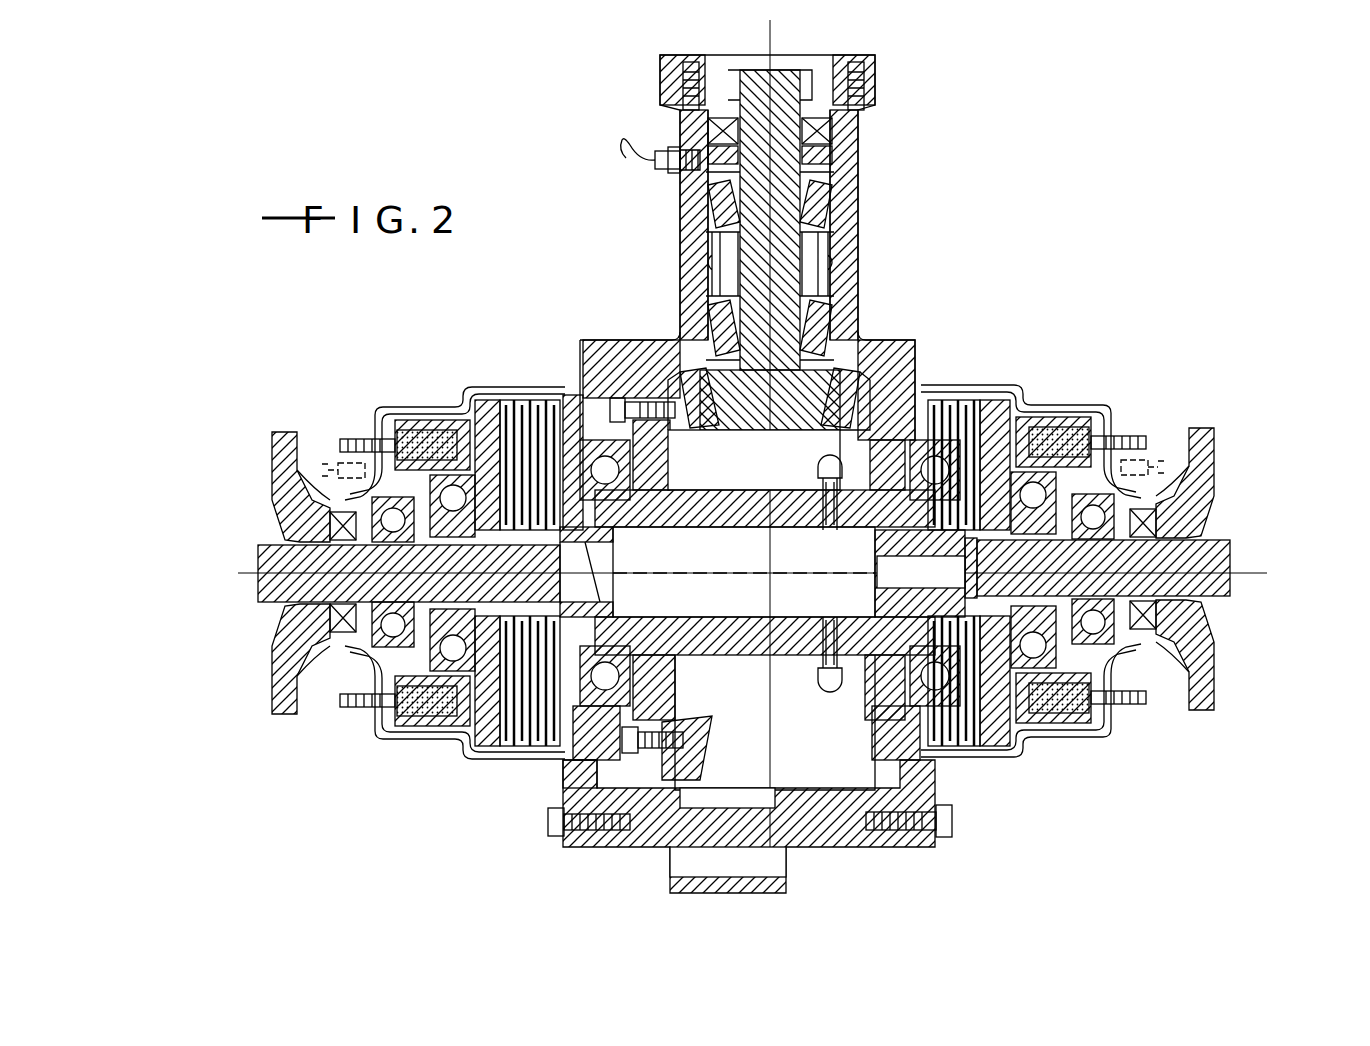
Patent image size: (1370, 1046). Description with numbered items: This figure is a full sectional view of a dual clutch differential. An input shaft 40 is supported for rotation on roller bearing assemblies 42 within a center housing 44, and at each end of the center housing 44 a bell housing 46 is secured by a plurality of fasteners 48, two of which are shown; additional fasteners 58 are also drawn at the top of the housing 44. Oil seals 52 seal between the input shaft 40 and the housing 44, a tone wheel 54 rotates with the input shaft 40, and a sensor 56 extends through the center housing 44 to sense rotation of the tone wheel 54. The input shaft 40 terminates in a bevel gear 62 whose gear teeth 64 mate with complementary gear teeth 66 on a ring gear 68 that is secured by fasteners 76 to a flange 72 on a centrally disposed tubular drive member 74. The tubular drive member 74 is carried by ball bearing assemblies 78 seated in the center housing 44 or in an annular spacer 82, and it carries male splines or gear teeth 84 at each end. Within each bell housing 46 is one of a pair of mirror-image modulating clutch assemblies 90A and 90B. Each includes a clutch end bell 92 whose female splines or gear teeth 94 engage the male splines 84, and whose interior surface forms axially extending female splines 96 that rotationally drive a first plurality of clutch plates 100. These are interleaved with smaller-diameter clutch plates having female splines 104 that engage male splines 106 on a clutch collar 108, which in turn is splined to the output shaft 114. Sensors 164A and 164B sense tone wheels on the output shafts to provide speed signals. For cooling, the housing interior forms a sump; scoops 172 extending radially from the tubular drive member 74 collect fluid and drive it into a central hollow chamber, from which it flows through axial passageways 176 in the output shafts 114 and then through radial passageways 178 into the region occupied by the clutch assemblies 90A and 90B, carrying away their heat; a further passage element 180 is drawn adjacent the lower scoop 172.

The input shaft 40 is at (805, 215).
The roller bearing assemblies 42 is at (830, 210).
The center housing 44 is at (868, 335).
The bell housing 46 is at (575, 795).
The fasteners 48 is at (548, 840).
The oil seals 52 is at (840, 130).
The tone wheel 54 is at (840, 156).
The sensor 56 is at (660, 170).
The flange bolts 58 is at (860, 80).
The bevel gear 62 is at (745, 422).
The gear teeth 64 is at (833, 432).
The gear teeth 66 is at (712, 744).
The ring gear 68 is at (690, 725).
The flange 72 is at (680, 680).
The tubular drive member 74 is at (695, 615).
The fasteners 76 is at (628, 398).
The ball bearing assemblies 78 is at (600, 455).
The annular spacer 82 is at (570, 770).
The male splines or gear teeth 84 is at (605, 538).
The modulating clutch assembly 90A is at (445, 772).
The modulating clutch assembly 90B is at (1115, 387).
The clutch end bell 92 is at (565, 410).
The female splines or gear teeth 94 is at (605, 560).
The female splines 96 is at (1012, 410).
The first plurality of clutch plates 100 is at (975, 420).
The female splines 104 is at (1120, 553).
The male splines 106 is at (478, 520).
The clutch collar 108 is at (508, 630).
The output shaft 114 is at (822, 562).
The sensor 164A is at (348, 463).
The sensor 164B is at (1145, 463).
The scoops 172 is at (825, 690).
The axial passageways 176 is at (925, 588).
The radial passageways 178 is at (968, 545).
The pin stem 180 is at (868, 610).